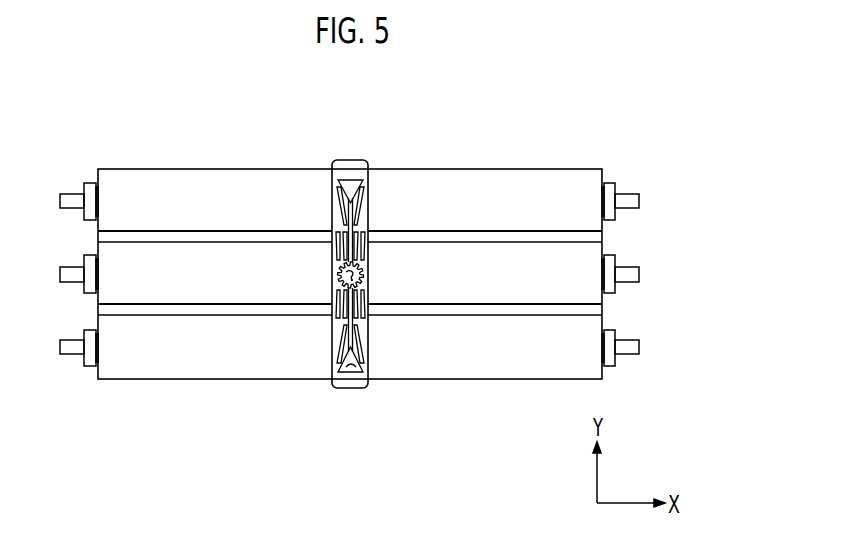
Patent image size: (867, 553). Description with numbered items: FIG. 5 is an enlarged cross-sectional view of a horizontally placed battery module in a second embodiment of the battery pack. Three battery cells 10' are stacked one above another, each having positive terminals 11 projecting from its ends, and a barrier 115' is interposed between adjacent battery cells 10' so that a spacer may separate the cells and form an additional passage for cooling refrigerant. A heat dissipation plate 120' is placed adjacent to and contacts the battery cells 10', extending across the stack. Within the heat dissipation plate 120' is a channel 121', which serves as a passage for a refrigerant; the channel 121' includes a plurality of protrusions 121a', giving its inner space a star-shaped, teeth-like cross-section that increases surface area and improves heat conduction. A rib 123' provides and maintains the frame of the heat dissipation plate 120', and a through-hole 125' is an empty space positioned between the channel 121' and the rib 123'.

The battery cell 10' is at (350, 235).
The positive terminal 11 is at (629, 193).
The barrier 115' is at (395, 263).
The heat dissipation plate 120' is at (331, 234).
The channel 121' is at (323, 314).
The protrusion 121a' is at (387, 346).
The rib 123' is at (334, 420).
The through-hole 125' is at (359, 419).